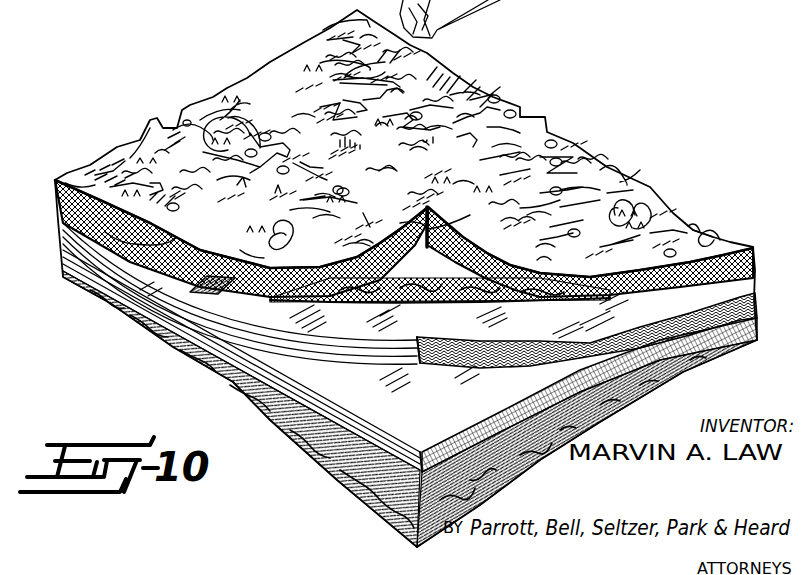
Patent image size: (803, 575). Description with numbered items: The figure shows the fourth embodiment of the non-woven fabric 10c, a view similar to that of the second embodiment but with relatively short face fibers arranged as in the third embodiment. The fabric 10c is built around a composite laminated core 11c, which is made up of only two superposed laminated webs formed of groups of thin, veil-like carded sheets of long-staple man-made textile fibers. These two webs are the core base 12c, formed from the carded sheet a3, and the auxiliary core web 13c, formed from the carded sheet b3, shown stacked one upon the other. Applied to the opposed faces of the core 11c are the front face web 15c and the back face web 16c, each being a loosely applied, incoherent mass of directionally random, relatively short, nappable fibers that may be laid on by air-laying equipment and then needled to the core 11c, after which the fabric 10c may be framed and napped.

The non-woven fabric 10c is at (543, 97).
The core 11c is at (760, 265).
The core base 12c is at (372, 438).
The auxiliary core web 13c is at (453, 366).
The front face web 15c is at (225, 92).
The back face web 16c is at (230, 380).
The carded sheet a3 is at (66, 242).
The carded sheet b3 is at (217, 283).